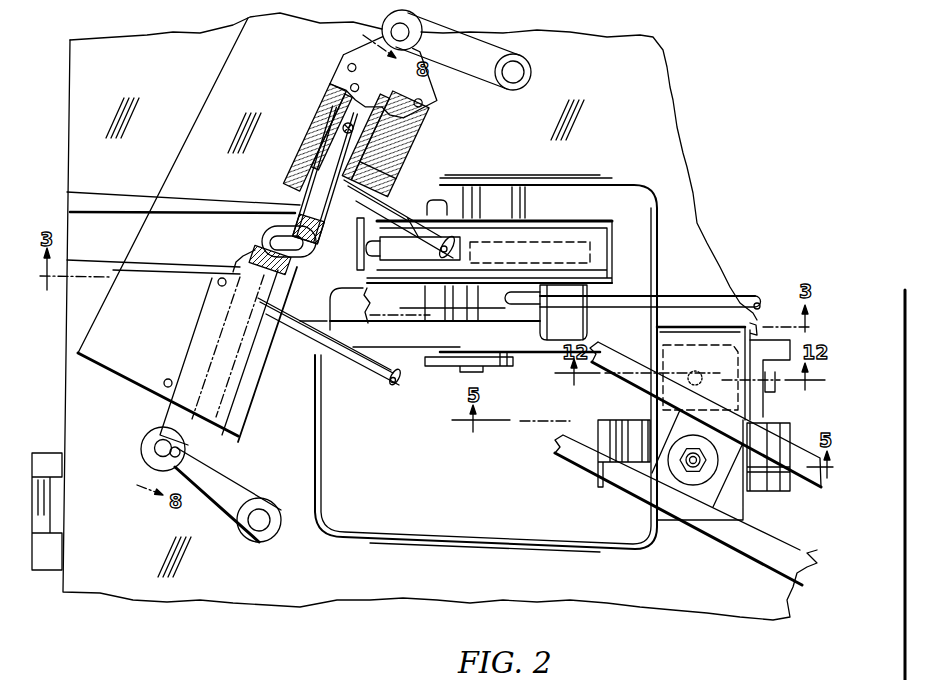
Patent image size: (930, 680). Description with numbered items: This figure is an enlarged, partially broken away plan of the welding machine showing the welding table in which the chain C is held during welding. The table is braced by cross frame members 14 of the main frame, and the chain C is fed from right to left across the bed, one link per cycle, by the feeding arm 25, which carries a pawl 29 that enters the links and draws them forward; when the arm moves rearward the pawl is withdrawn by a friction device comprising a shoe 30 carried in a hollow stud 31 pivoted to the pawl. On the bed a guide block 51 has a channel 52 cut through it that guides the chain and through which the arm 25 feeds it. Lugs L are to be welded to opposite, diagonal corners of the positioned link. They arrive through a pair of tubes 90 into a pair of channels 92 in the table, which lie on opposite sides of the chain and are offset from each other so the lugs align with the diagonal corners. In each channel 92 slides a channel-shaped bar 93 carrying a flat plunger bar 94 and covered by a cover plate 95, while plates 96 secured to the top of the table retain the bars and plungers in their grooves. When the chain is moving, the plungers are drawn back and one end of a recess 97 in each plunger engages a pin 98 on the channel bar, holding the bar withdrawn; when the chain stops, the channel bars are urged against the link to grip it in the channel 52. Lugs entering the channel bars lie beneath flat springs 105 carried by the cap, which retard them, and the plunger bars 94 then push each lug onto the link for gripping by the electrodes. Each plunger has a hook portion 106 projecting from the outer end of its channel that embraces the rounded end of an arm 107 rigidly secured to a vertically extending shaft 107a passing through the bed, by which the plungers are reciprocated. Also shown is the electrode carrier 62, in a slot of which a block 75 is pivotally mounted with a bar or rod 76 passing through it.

The cross frame members 14 is at (450, 336).
The feeding arm 25 is at (588, 232).
The pawl 29 is at (413, 249).
The shoe 30 is at (640, 296).
The hollow stud 31 is at (583, 317).
The guide block 51 is at (178, 268).
The channel 52 is at (190, 219).
The carrier 62 is at (580, 433).
The block 75 is at (650, 476).
The bar or rod 76 is at (688, 464).
The tubes 90 is at (441, 221).
The channels 92 is at (420, 128).
The channel-shaped bar 93 is at (342, 109).
The plunger bar 94 is at (348, 128).
The cover plate 95 is at (400, 120).
The plates 96 is at (180, 352).
The recess 97 is at (412, 153).
The pin 98 is at (385, 140).
The flat springs 105 is at (342, 158).
The hook portion 106 is at (143, 448).
The arms 107 is at (479, 52).
The vertically extending shafts 107a is at (531, 68).
The lugs L is at (288, 213).
The chain C is at (252, 230).